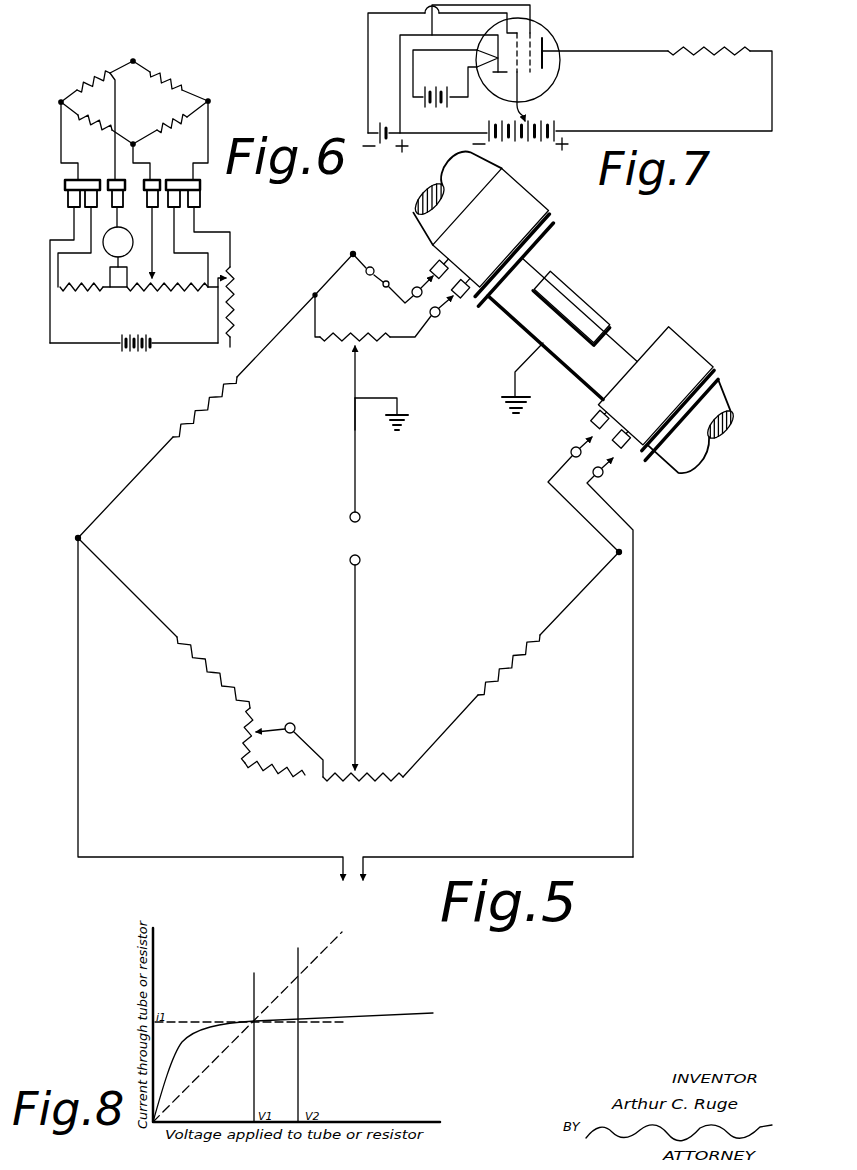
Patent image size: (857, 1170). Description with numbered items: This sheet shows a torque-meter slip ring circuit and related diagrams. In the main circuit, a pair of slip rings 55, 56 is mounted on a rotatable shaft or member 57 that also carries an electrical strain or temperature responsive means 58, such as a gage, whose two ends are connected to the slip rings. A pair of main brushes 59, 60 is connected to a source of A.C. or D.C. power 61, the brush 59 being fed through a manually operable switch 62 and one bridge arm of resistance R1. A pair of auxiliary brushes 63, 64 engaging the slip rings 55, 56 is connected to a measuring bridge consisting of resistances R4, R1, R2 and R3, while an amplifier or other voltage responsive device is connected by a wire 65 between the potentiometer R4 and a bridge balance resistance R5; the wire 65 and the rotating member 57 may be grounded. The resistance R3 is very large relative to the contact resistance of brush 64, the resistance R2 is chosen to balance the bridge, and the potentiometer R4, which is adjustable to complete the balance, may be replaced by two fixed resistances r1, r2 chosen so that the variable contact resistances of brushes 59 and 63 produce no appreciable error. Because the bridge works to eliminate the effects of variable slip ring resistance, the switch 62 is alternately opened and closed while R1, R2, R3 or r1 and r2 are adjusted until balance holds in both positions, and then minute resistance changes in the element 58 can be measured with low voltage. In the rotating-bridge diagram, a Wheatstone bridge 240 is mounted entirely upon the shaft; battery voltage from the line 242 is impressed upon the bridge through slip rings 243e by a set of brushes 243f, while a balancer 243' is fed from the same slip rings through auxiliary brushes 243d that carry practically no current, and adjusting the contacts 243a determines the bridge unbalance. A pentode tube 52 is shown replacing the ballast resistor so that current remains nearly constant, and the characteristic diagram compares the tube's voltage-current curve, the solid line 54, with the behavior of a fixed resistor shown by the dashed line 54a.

In FIG. 6, the bridge 240 is at (195, 91).
In FIG. 6, the line 242 is at (188, 345).
In FIG. 6, the balancer 243' is at (134, 298).
In FIG. 6, the contacts 243a is at (130, 277).
In FIG. 6, the auxiliary brushes 243d is at (89, 188).
In FIG. 6, the slip rings 243e is at (200, 185).
In FIG. 6, the brushes 243f is at (68, 201).
In FIG. 7, the pentode tube 52 is at (545, 24).
In FIG. 8, the solid line 54 is at (187, 1040).
In FIG. 8, the dashed line 54a is at (193, 1083).
In FIG. 5, the slip ring 55 is at (529, 198).
In FIG. 5, the slip ring 56 is at (684, 351).
In FIG. 5, the rotatable shaft or member 57 is at (421, 189).
In FIG. 5, the electrical strain or temperature responsive means 58 is at (568, 288).
In FIG. 5, the main brush 59 is at (432, 268).
In FIG. 5, the main brush 60 is at (610, 454).
In FIG. 5, the source of power 61 is at (350, 880).
In FIG. 5, the manually operable switch 62 is at (387, 268).
In FIG. 5, the auxiliary brush 63 is at (455, 300).
In FIG. 5, the auxiliary brush 64 is at (590, 428).
In FIG. 5, the wire 65 is at (357, 497).
In FIG. 5, the bridge arm resistance R1 is at (215, 396).
In FIG. 5, the resistance R2 is at (200, 657).
In FIG. 5, the resistance R3 is at (511, 664).
In FIG. 5, the potentiometer R4 is at (373, 318).
In FIG. 5, the bridge balance resistance R5 is at (363, 769).
In FIG. 5, the fixed resistance r1 is at (332, 348).
In FIG. 5, the fixed resistance r2 is at (377, 348).